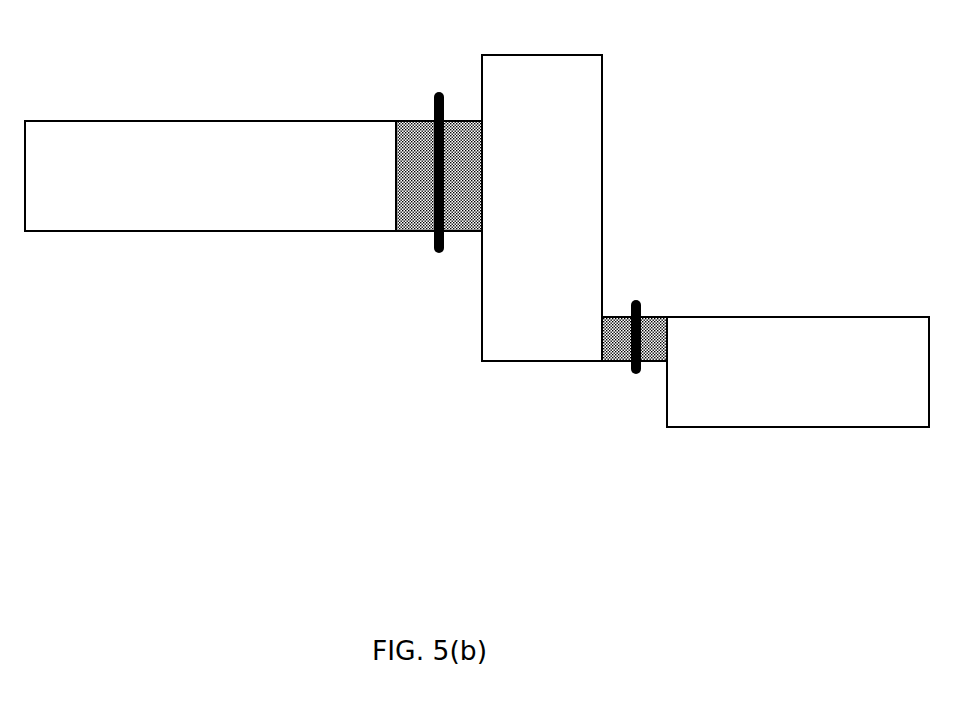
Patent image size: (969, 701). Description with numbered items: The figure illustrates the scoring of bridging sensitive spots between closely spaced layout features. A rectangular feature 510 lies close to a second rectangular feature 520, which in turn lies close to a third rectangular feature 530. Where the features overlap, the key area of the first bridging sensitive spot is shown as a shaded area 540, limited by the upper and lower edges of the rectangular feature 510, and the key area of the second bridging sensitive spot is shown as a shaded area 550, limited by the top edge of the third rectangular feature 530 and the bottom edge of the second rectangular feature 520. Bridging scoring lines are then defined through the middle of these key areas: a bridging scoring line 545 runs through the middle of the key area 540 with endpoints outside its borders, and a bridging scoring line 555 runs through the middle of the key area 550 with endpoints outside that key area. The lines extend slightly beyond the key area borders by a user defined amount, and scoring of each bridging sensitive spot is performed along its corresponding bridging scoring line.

The rectangular feature 510 is at (234, 188).
The second rectangular feature 520 is at (567, 220).
The third rectangular feature 530 is at (822, 384).
The key area 540 is at (407, 119).
The bridging scoring line 545 is at (435, 93).
The key area 550 is at (657, 315).
The bridging scoring line 555 is at (637, 297).